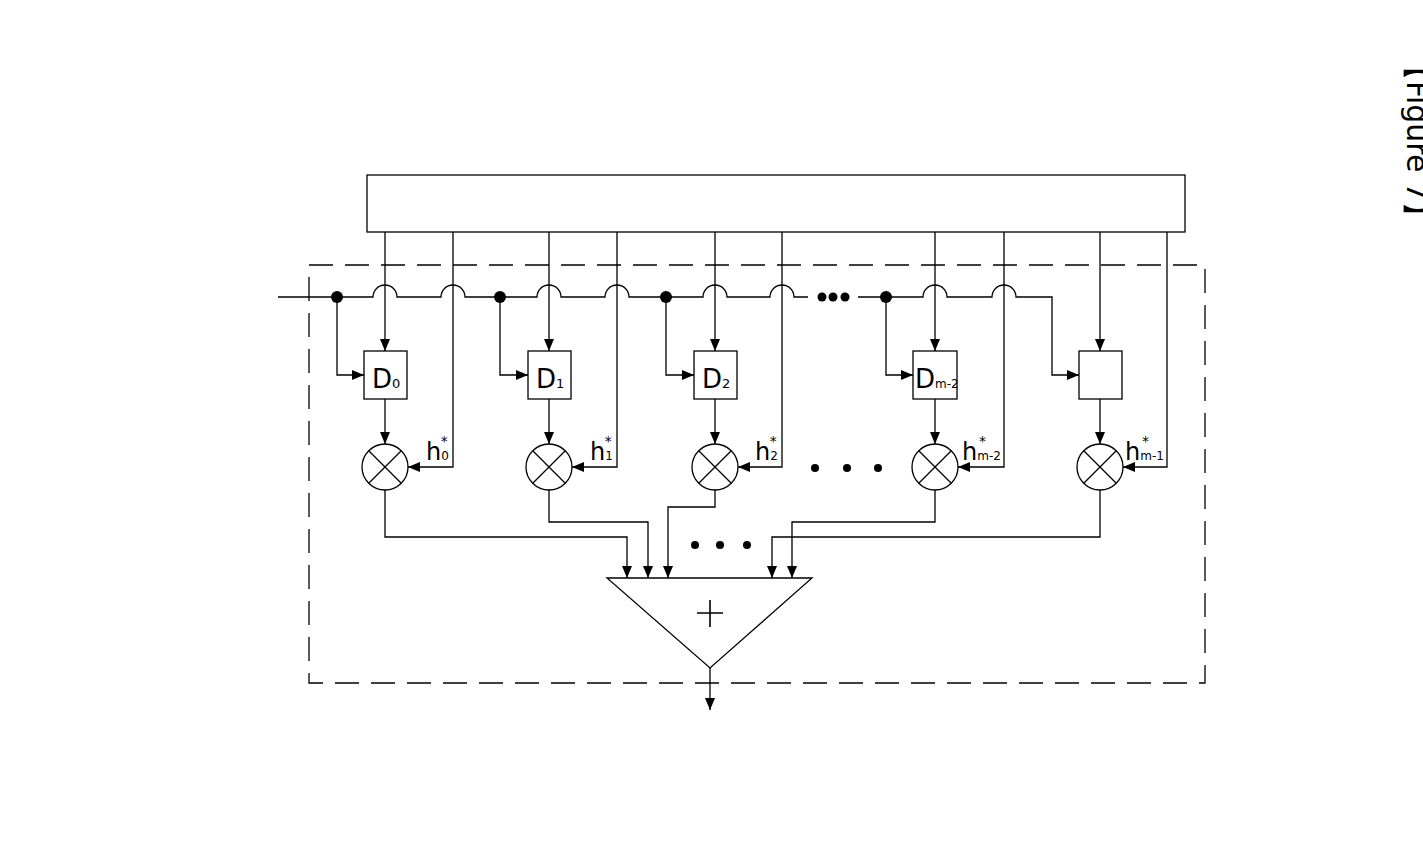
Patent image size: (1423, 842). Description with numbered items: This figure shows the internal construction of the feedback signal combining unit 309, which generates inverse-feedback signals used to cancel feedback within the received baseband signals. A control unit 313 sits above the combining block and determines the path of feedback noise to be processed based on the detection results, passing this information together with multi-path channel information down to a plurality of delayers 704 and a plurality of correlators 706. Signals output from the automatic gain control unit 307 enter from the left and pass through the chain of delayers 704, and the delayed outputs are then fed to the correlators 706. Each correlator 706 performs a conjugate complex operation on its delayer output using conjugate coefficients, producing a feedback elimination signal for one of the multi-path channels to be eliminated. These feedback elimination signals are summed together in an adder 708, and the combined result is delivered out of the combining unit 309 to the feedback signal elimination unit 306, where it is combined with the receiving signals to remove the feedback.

The control unit 313 is at (1185, 203).
The automatic gain control unit 307 is at (195, 314).
The feedback signal combining unit 309 is at (1205, 620).
The delayer 704 is at (1081, 399).
The correlator 706 is at (1114, 488).
The adder 708 is at (668, 632).
The feedback signal elimination unit 306 is at (706, 740).